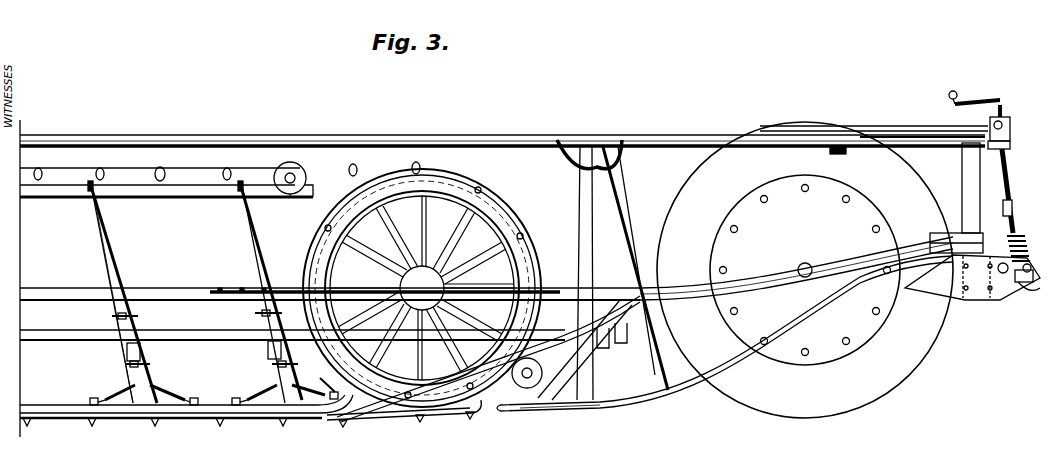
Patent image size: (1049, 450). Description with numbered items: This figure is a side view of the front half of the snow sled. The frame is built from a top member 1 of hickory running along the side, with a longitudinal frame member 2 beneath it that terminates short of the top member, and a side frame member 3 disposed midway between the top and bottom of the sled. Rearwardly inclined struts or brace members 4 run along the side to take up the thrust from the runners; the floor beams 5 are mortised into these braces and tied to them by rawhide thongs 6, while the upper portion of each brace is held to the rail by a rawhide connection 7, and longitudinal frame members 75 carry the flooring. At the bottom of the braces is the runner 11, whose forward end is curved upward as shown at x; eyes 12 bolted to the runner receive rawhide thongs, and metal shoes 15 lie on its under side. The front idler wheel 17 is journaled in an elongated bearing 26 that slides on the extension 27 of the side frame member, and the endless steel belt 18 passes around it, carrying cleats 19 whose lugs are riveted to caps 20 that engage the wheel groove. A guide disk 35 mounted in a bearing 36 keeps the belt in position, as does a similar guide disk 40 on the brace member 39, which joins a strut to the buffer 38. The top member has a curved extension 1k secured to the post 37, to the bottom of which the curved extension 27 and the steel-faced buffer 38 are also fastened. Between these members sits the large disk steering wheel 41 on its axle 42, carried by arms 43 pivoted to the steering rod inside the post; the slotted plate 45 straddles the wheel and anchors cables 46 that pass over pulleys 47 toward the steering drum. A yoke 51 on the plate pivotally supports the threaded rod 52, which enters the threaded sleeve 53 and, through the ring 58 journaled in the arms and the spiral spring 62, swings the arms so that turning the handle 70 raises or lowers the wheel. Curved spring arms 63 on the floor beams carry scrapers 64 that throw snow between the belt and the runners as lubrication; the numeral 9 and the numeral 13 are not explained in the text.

The top frame member 1 is at (516, 145).
The curved extension of top frame member 1k is at (870, 136).
The longitudinal frame member 2 is at (185, 192).
The longitudinal side frame member 3 is at (166, 288).
The strut or brace member 4 is at (100, 254).
The floor beam 5 is at (127, 350).
The rawhide thong 6 is at (112, 316).
The rawhide connection 7 is at (90, 190).
The traction wheel rim 9 is at (422, 288).
The runner 11 is at (150, 410).
The eye 12 is at (90, 402).
The chain 13 is at (110, 395).
The metal shoe 15 is at (196, 418).
The idler wheel 17 is at (326, 228).
The endless belt 18 is at (200, 180).
The cleat 19 is at (232, 176).
The metal cap 20 is at (40, 176).
The elongated bearing 26 is at (278, 288).
The extension of side frame member 27 is at (567, 287).
The guide disk 35 is at (283, 193).
The bearing 36 is at (294, 190).
The post 37 is at (962, 173).
The buffer 38 is at (570, 410).
The brace member 39 is at (585, 350).
The guide disk 40 is at (537, 360).
The steering wheel 41 is at (794, 122).
The axle 42 is at (860, 262).
The arm 43 is at (928, 284).
The plate 45 is at (912, 127).
The flexible member 46 is at (506, 148).
The pulley 47 is at (840, 150).
The yoke 51 is at (1010, 128).
The rod 52 is at (1002, 117).
The threaded sleeve 53 is at (1013, 212).
The ring 58 is at (1028, 293).
The spiral spring 62 is at (1028, 255).
The curved spring arm 63 is at (422, 288).
The scraper 64 is at (343, 422).
The handle 70 is at (974, 92).
The longitudinal frame member 75 is at (176, 337).
The reference point x is at (327, 384).